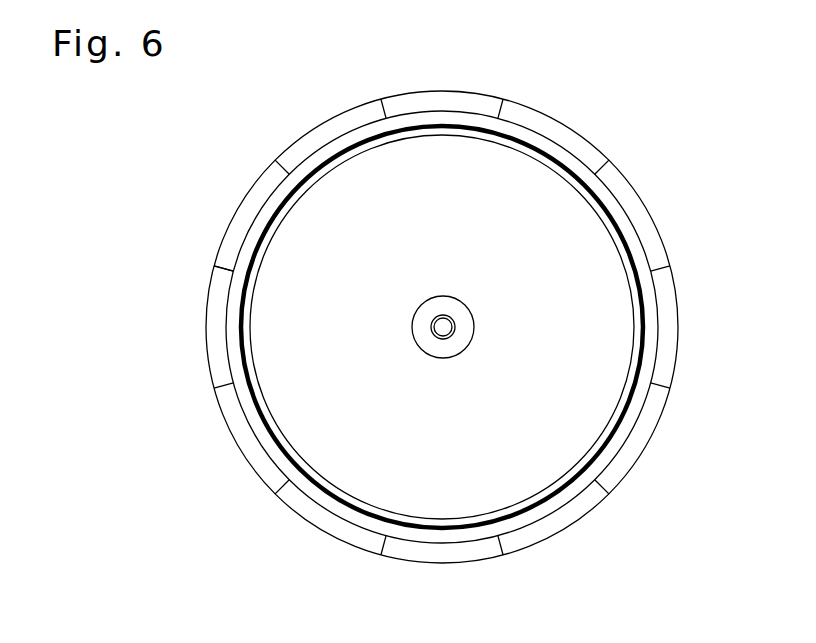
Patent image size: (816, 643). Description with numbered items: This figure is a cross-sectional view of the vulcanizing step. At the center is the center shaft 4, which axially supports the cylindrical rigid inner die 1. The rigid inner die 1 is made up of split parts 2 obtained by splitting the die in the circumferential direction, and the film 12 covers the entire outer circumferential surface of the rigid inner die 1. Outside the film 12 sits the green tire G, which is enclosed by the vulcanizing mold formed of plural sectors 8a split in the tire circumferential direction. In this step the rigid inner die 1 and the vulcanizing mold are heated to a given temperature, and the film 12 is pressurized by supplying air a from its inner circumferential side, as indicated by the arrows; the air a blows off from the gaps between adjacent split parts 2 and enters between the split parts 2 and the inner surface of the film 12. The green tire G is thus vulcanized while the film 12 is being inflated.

The rigid inner die 1 is at (552, 153).
The split parts 2 is at (335, 165).
The center shaft 4 is at (445, 327).
The sectors 8a is at (437, 105).
The film 12 is at (257, 247).
The air a is at (290, 198).
The green tire G is at (228, 298).